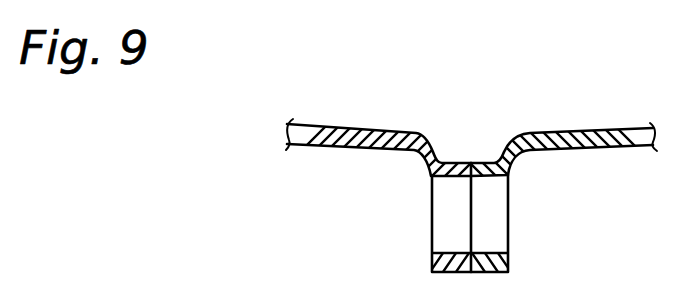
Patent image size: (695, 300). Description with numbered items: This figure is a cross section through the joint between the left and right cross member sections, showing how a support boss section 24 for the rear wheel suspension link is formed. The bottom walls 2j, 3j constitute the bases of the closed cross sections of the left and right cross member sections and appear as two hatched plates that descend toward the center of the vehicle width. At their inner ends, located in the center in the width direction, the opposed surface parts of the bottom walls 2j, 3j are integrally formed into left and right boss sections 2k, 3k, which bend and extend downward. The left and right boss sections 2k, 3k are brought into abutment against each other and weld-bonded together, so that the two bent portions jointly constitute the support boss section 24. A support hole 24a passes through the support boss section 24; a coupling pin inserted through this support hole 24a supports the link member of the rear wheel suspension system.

The bottom wall 2j is at (350, 128).
The bottom wall 3j is at (588, 129).
The support boss section 24 is at (518, 205).
The support hole 24a is at (463, 234).
The left boss section 2k is at (431, 259).
The right boss section 3k is at (509, 260).